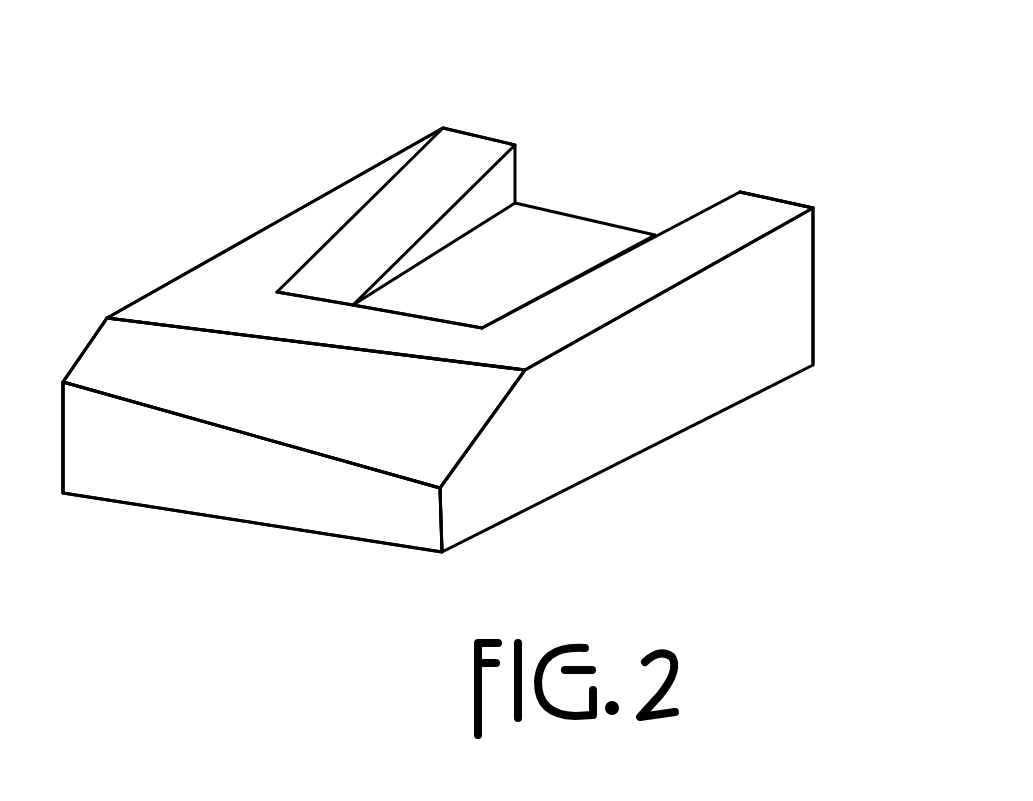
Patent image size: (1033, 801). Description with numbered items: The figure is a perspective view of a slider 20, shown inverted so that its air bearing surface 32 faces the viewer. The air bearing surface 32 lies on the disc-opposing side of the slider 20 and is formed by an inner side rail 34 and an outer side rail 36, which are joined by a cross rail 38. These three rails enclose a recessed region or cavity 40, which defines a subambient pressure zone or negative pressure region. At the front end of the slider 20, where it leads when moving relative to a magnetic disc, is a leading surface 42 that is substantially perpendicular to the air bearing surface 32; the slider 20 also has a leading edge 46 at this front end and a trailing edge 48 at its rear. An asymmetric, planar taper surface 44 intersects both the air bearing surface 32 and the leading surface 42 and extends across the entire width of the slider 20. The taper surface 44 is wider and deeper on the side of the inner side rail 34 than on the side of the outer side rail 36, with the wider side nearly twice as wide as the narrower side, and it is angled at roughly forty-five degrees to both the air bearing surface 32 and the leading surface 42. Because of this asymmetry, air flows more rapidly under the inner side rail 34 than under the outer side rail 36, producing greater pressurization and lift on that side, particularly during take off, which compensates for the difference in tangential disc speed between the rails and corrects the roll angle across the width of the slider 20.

The slider 20 is at (670, 112).
The air bearing surface 32 is at (318, 240).
The inner side rail 34 is at (765, 217).
The outer side rail 36 is at (463, 150).
The cross rail 38 is at (205, 303).
The recessed region or cavity 40 is at (538, 233).
The leading surface 42 is at (230, 478).
The taper surface 44 is at (435, 437).
The leading edge 46 is at (378, 473).
The trailing edge 48 is at (748, 192).